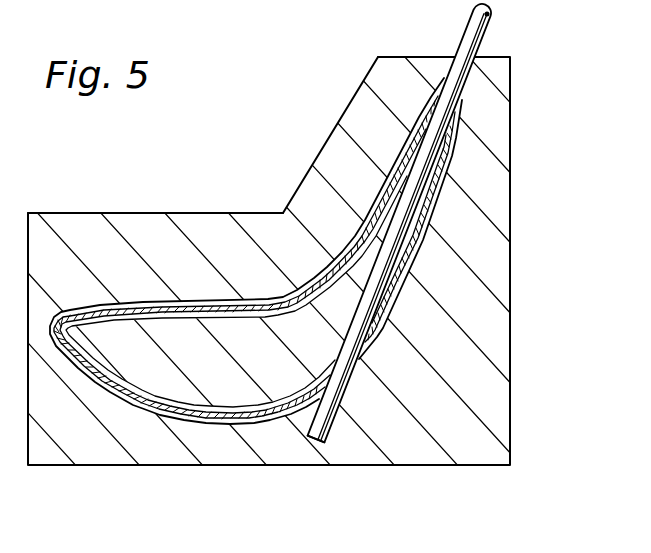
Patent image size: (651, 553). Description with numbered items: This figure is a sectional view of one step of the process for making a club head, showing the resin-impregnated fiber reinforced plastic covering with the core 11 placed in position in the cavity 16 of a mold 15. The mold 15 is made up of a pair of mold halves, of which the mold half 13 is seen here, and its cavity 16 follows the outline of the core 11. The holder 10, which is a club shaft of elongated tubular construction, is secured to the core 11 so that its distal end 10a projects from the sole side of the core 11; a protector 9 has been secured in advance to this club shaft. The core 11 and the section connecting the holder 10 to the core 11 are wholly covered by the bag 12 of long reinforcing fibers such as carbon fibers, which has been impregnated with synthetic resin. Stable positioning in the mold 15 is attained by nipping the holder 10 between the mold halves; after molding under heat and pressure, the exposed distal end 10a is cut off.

The protector 9 is at (438, 165).
The holder 10 is at (489, 22).
The distal end 10a is at (333, 428).
The core 11 is at (258, 392).
The bag 12 is at (120, 406).
The mold half 13 is at (139, 218).
The mold 15 is at (224, 203).
The cavity 16 is at (193, 408).